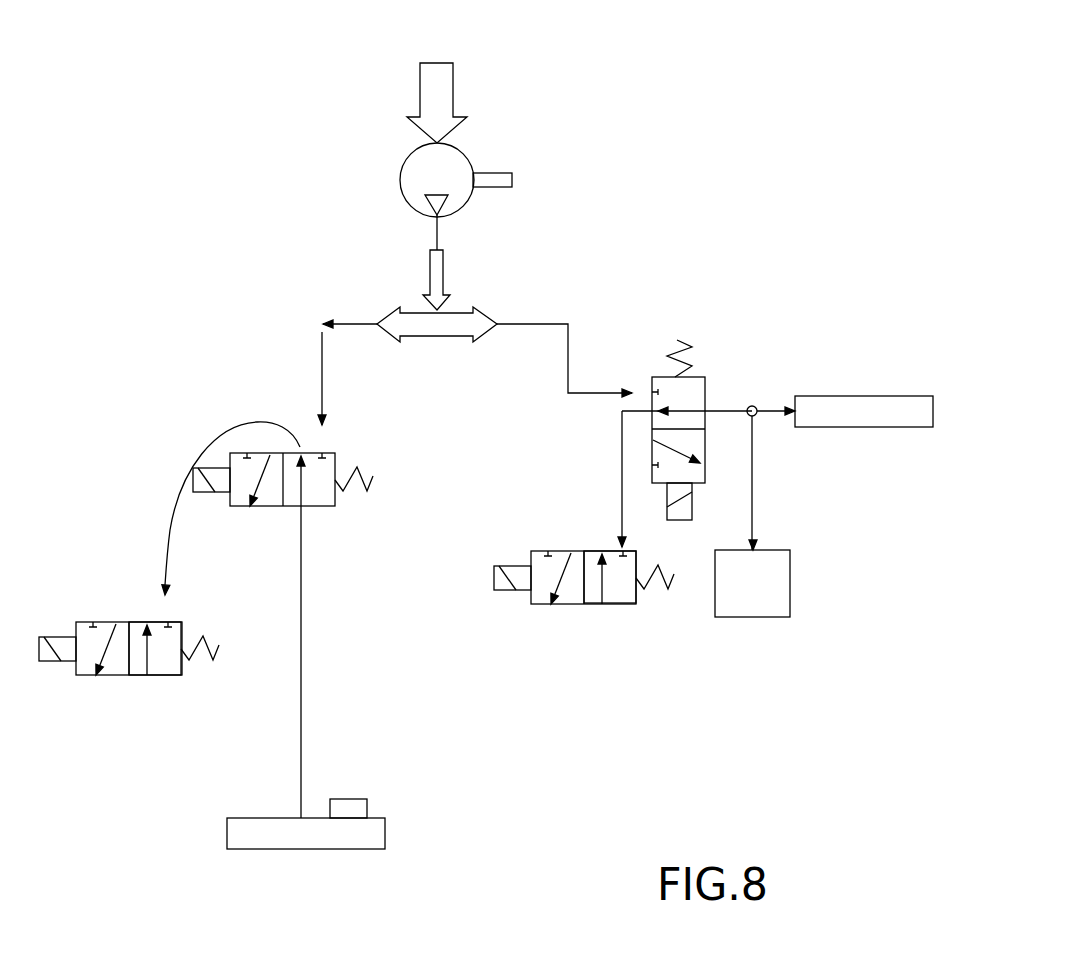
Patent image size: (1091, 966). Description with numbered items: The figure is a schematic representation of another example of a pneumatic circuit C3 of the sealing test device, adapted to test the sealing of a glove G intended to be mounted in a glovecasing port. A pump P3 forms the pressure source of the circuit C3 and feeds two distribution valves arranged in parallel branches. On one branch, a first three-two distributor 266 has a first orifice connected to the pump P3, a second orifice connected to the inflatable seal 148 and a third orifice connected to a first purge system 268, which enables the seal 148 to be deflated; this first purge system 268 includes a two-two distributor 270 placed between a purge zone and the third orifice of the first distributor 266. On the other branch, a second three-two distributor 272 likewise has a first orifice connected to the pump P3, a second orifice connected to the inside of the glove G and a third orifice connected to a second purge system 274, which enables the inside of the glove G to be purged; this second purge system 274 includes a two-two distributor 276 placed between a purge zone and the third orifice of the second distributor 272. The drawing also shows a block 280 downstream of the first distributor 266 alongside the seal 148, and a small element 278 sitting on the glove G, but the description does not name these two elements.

The circuit C3 is at (684, 88).
The pump P3 is at (453, 163).
The second distributor 3/2 272 is at (279, 391).
The second purge system 274 is at (78, 710).
The distributor 2/2 276 is at (168, 675).
The first purge system 268 is at (547, 629).
The distributor 2/2 270 is at (617, 593).
The first distributor 3/2 266 is at (727, 363).
The inflatable seal 148 is at (887, 397).
The actuator 280 is at (790, 574).
The stopper block 278 is at (347, 807).
The glove G is at (323, 849).